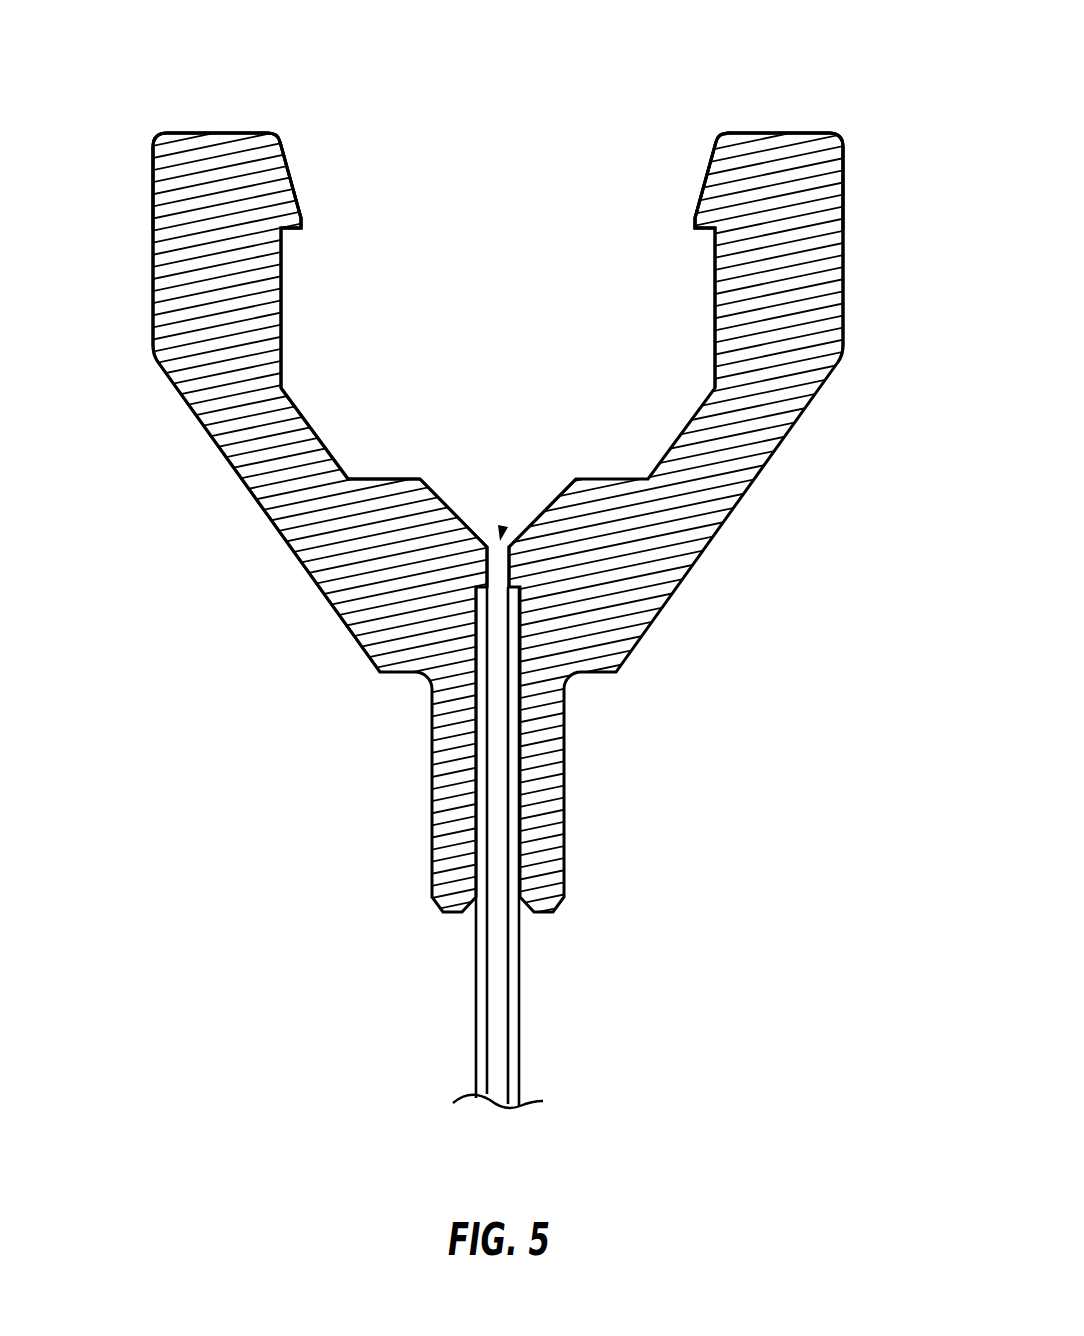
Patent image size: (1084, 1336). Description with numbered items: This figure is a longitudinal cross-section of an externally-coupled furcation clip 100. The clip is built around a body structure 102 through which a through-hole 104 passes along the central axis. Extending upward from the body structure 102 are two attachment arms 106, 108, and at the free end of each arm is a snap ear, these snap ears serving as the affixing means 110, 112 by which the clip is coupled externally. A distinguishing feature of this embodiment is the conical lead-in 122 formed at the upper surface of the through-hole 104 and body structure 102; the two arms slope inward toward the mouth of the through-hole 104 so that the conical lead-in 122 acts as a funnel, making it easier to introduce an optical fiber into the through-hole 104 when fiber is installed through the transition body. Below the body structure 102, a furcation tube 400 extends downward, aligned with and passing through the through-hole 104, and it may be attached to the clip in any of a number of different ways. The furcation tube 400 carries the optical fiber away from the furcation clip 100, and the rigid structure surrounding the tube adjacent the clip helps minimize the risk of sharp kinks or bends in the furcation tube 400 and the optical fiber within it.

The externally-coupled furcation clip 100 is at (594, 60).
The body structure 102 is at (320, 558).
The through-hole 104 is at (500, 540).
The attachment arm 106 is at (157, 312).
The attachment arm 108 is at (839, 306).
The snap ear affixing means 110 is at (297, 180).
The snap ear affixing means 112 is at (698, 180).
The conical lead-in 122 is at (447, 503).
The furcation tube 400 is at (520, 988).